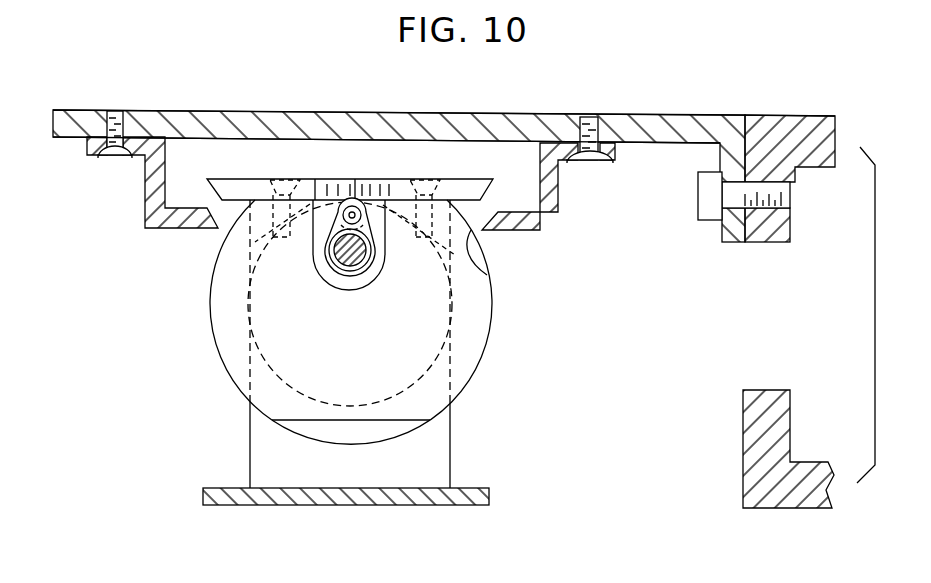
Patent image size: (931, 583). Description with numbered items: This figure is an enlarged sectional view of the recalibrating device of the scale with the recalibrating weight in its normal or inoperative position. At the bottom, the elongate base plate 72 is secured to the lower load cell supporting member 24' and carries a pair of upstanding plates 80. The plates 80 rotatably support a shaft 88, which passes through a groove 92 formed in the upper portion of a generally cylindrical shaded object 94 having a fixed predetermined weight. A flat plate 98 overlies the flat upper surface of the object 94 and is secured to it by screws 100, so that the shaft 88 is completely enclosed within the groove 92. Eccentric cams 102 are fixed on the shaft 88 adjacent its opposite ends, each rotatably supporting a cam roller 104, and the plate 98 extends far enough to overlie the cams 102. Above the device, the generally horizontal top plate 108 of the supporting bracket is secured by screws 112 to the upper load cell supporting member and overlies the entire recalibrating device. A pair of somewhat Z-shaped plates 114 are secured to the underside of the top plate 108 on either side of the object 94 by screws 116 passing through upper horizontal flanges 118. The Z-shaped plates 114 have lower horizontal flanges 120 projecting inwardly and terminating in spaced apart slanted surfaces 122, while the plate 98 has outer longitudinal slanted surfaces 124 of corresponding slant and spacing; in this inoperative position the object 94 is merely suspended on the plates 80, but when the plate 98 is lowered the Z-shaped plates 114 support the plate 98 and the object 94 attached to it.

The top plate 108 is at (638, 118).
The lower load cell supporting member 24' is at (749, 449).
The screws 112 is at (698, 212).
The Z-shaped plates 114 is at (145, 210).
The upper horizontal flanges 118 is at (87, 145).
The lower horizontal flanges 120 is at (167, 228).
The screws 116 is at (112, 170).
The flat plate 98 is at (304, 179).
The cam roller 104 is at (355, 187).
The screws 100 is at (424, 183).
The outer longitudinal slanted surfaces 124 is at (212, 190).
The generally cylindrical shaded object 94 is at (478, 353).
The slanted surfaces 122 is at (238, 222).
The upstanding plates 80 is at (450, 460).
The base plate 72 is at (330, 505).
The eccentric cams 102 is at (367, 235).
The groove 92 is at (338, 278).
The shaft 88 is at (355, 262).